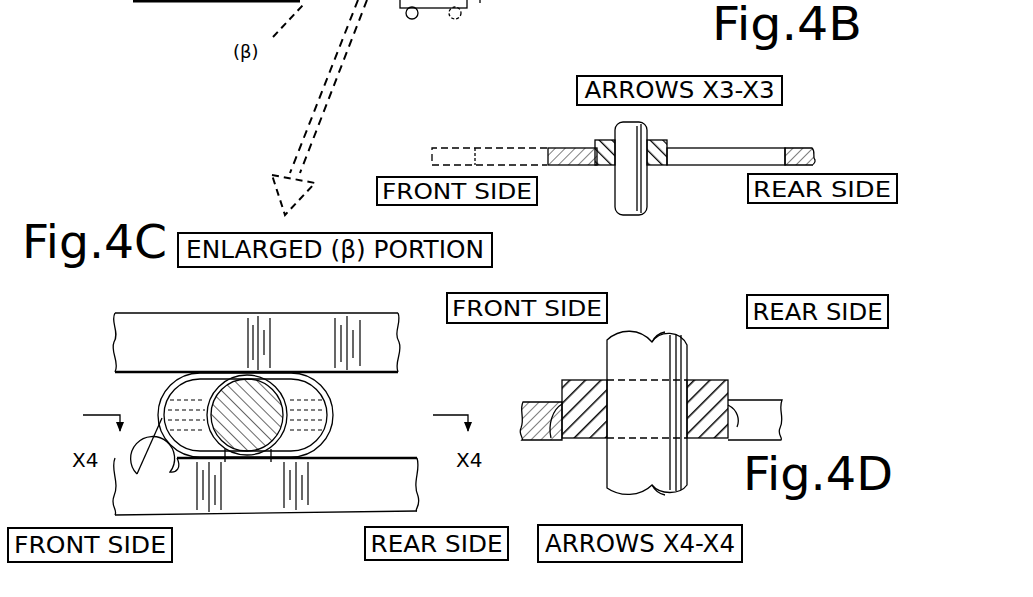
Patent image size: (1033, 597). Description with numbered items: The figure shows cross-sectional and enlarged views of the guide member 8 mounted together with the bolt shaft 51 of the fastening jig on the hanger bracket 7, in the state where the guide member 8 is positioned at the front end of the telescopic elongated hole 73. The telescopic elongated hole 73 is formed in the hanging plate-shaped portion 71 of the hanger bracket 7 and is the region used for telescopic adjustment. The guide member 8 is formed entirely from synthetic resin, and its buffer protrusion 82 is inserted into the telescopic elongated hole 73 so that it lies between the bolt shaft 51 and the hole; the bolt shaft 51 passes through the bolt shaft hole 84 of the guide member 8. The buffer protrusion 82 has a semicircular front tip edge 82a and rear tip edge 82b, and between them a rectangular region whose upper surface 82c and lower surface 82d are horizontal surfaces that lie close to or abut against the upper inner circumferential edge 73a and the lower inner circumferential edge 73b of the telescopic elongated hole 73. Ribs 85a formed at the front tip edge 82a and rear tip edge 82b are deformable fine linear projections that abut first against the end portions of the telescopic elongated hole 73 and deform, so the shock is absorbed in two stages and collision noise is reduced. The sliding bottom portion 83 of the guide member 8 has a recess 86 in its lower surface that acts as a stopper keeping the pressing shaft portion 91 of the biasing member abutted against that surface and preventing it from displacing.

In FIG. 4B, the hanger bracket 7 is at (561, 170).
In FIG. 4C, the hanger bracket 7 is at (314, 520).
In FIG. 4D, the hanger bracket 7 is at (514, 405).
In FIG. 4B, the guide member 8 is at (662, 131).
In FIG. 4C, the guide member 8 is at (190, 392).
In FIG. 4D, the guide member 8 is at (717, 449).
In FIG. 4B, the bolt shaft 51 is at (648, 203).
In FIG. 4C, the bolt shaft 51 is at (245, 440).
In FIG. 4D, the bolt shaft 51 is at (688, 368).
In FIG. 4B, the hanging plate-shaped portion 71 is at (593, 0).
In FIG. 4C, the hanging plate-shaped portion 71 is at (348, 490).
In FIG. 4B, the telescopic elongated hole 73 is at (755, 154).
In FIG. 4C, the telescopic elongated hole 73 is at (367, 384).
In FIG. 4D, the telescopic elongated hole 73 is at (766, 428).
In FIG. 4C, the upper inner circumferential edge 73a is at (390, 373).
In FIG. 4B, the lower inner circumferential edge 73b is at (553, 0).
In FIG. 4C, the lower inner circumferential edge 73b is at (394, 457).
In FIG. 4B, the buffer protrusion 82 is at (637, 178).
In FIG. 4C, the buffer protrusion 82 is at (258, 456).
In FIG. 4D, the buffer protrusion 82 is at (660, 442).
In FIG. 4B, the front tip edge 82a is at (597, 162).
In FIG. 4C, the front tip edge 82a is at (160, 412).
In FIG. 4D, the front tip edge 82a is at (554, 402).
In FIG. 4B, the rear tip edge 82b is at (663, 162).
In FIG. 4C, the rear tip edge 82b is at (333, 405).
In FIG. 4D, the rear tip edge 82b is at (730, 428).
In FIG. 4C, the upper surface 82c is at (210, 373).
In FIG. 4B, the lower surface 82d is at (480, 0).
In FIG. 4C, the lower surface 82d is at (222, 458).
In FIG. 4B, the sliding bottom portion 83 is at (397, 2).
In FIG. 4B, the bolt shaft hole 84 is at (619, 156).
In FIG. 4D, the bolt shaft hole 84 is at (606, 408).
In FIG. 4B, the rib 85a is at (505, 0).
In FIG. 4C, the rib 85a is at (163, 424).
In FIG. 4D, the rib 85a is at (550, 402).
In FIG. 4B, the recess 86 is at (441, 8).
In FIG. 4B, the pressing shaft portion 91 is at (413, 19).